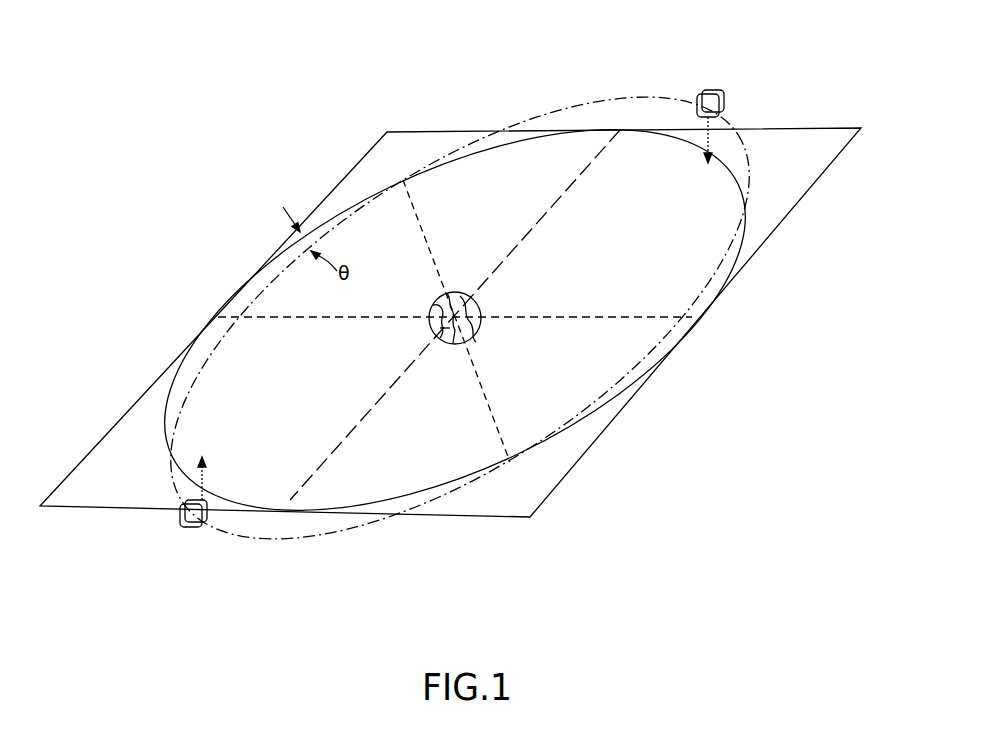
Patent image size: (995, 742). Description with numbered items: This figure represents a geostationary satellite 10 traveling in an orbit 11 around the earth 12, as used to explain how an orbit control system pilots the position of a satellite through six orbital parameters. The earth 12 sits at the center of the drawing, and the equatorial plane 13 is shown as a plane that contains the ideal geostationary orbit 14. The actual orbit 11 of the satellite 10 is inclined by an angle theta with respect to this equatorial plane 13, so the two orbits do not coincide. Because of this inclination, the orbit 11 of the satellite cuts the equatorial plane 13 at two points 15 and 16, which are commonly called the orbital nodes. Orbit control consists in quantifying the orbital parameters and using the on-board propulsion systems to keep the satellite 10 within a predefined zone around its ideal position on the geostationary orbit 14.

The geostationary satellite 10 is at (181, 513).
The orbit 11 is at (550, 110).
The earth 12 is at (481, 310).
The equatorial plane 13 is at (770, 234).
The ideal geostationary orbit 14 is at (590, 410).
The orbital node 15 is at (510, 460).
The orbital node 16 is at (403, 178).